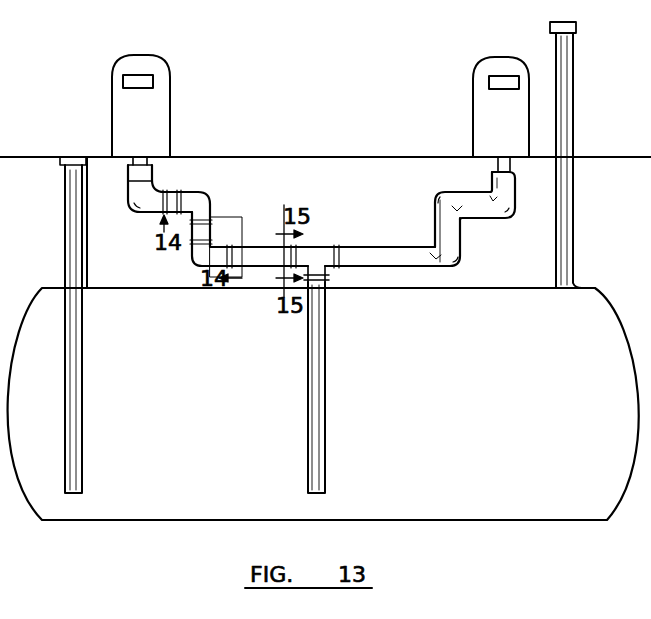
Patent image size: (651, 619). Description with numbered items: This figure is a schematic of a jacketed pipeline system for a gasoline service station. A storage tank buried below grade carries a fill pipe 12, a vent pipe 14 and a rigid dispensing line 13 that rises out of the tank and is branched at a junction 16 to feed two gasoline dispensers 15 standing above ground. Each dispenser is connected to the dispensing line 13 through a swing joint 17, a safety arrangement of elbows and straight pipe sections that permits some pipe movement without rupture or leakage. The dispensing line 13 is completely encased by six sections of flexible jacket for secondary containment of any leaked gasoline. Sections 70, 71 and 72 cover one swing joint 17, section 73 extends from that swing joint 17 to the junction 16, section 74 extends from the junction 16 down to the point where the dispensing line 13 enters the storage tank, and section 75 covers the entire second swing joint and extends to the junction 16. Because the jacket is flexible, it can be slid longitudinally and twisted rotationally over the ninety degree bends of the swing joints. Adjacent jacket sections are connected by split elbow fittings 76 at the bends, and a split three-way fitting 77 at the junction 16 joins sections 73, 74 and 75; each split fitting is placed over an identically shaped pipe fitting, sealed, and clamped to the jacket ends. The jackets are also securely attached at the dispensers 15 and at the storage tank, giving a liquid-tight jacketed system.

The fill pipe 12 is at (67, 351).
The dispensing line 13 is at (311, 352).
The vent pipe 14 is at (556, 248).
The gasoline dispenser 15 is at (125, 111).
The junction 16 is at (337, 233).
The swing joint 17 is at (212, 186).
The jacket section 70 is at (131, 171).
The jacket section 71 is at (174, 180).
The jacket section 72 is at (209, 265).
The jacket section 73 is at (261, 246).
The jacket section 74 is at (329, 284).
The jacket section 75 is at (448, 223).
The split elbow fitting 76 is at (122, 204).
The split three-way fitting 77 is at (325, 246).